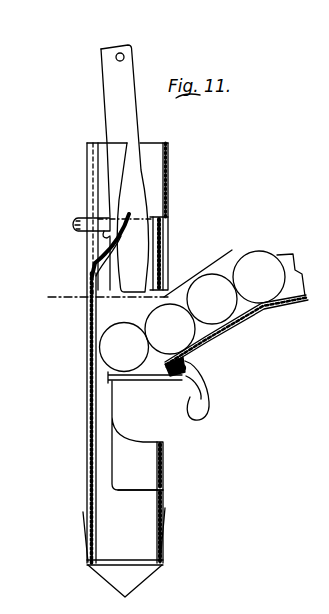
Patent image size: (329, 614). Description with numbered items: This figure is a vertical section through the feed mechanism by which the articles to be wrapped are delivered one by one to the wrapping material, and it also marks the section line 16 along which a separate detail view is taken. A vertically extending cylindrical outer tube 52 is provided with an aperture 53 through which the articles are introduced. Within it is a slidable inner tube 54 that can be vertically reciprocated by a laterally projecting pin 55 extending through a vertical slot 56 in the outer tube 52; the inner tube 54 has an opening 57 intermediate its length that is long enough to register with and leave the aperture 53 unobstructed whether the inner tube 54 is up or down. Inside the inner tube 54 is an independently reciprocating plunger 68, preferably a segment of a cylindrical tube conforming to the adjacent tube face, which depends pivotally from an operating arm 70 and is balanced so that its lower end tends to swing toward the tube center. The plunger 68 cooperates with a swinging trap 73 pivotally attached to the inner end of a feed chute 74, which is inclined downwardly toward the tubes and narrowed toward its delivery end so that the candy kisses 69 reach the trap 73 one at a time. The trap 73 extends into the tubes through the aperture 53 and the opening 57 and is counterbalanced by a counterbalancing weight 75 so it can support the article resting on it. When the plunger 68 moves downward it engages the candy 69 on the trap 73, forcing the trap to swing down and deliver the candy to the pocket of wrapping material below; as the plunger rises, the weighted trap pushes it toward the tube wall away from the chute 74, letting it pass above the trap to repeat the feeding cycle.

The section line 16 is at (248, 269).
The outer tube 52 is at (86, 403).
The aperture 53 is at (132, 443).
The inner tube 54 is at (93, 505).
The pin 55 is at (73, 225).
The vertical slot 56 is at (98, 188).
The opening 57 is at (146, 490).
The plunger 68 is at (121, 98).
The candy kisses 69 is at (203, 284).
The operating arm 70 is at (126, 57).
The swinging trap 73 is at (147, 381).
The feed chute 74 is at (239, 299).
The counterbalancing weight 75 is at (209, 406).